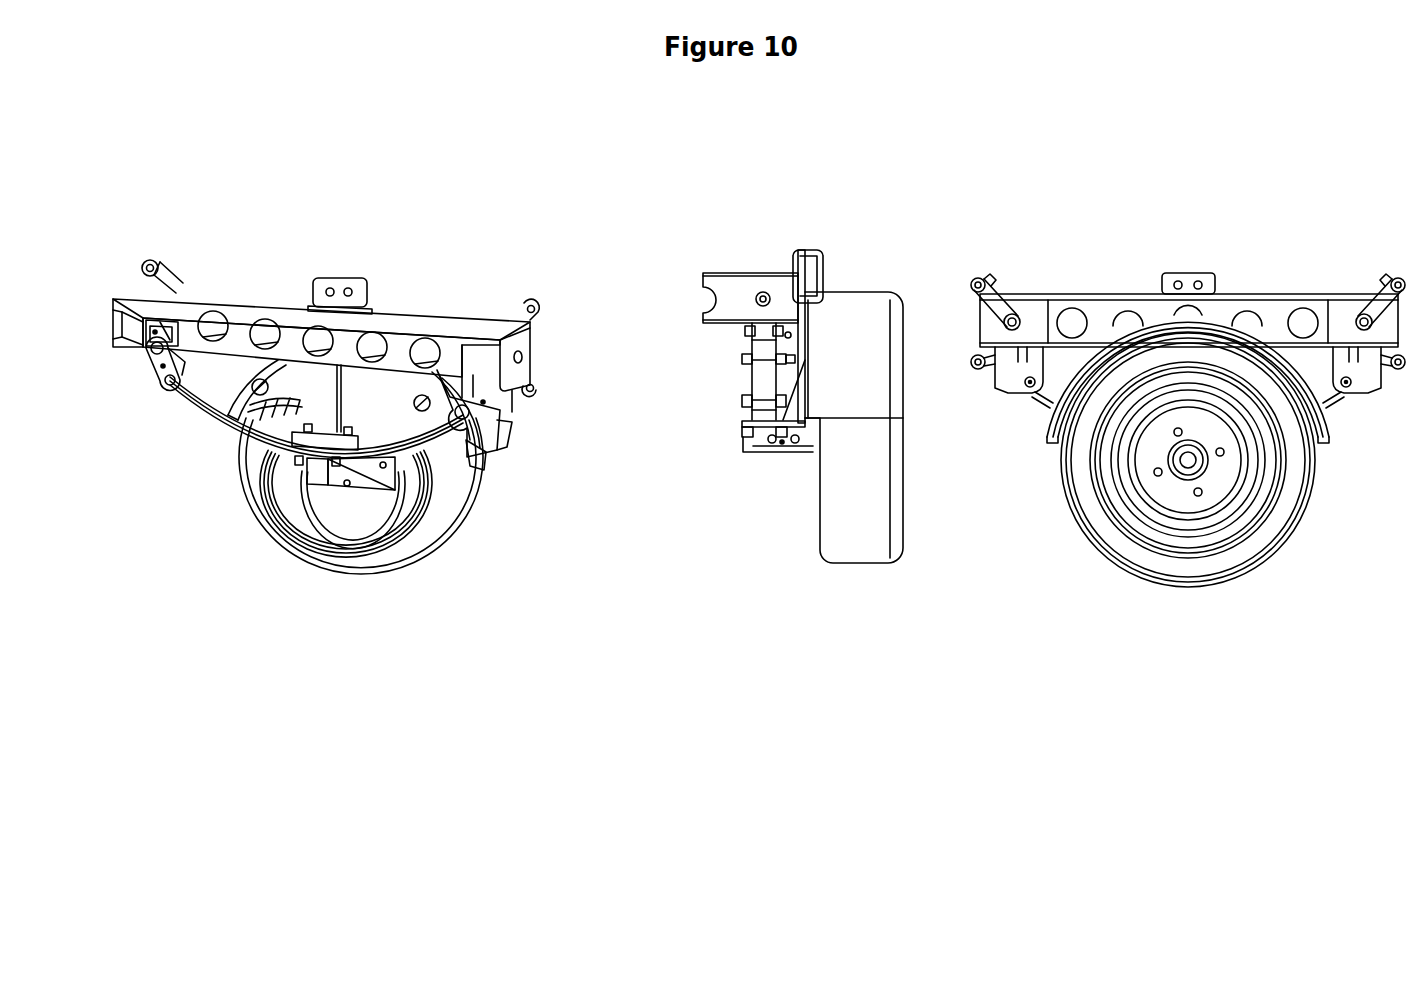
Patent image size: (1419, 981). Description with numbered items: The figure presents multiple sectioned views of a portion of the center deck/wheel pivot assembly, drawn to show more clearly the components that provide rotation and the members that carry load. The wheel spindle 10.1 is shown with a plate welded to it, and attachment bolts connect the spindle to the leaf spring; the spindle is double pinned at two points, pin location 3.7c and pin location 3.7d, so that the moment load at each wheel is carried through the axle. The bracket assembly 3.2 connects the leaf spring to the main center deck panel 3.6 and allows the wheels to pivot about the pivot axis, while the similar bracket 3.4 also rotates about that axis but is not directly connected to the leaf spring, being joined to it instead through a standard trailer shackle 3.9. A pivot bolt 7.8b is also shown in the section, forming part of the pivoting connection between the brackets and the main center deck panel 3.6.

The bracket assembly 3.2 is at (483, 417).
The bracket 3.4 is at (172, 310).
The main center deck panel 3.6 is at (388, 322).
The standard trailer shackle 3.9 is at (166, 382).
The pivot bolt 7.8b is at (751, 290).
The pin location 3.7c is at (769, 439).
The wheel spindle 10.1 is at (781, 444).
The pin location 3.7d is at (795, 452).